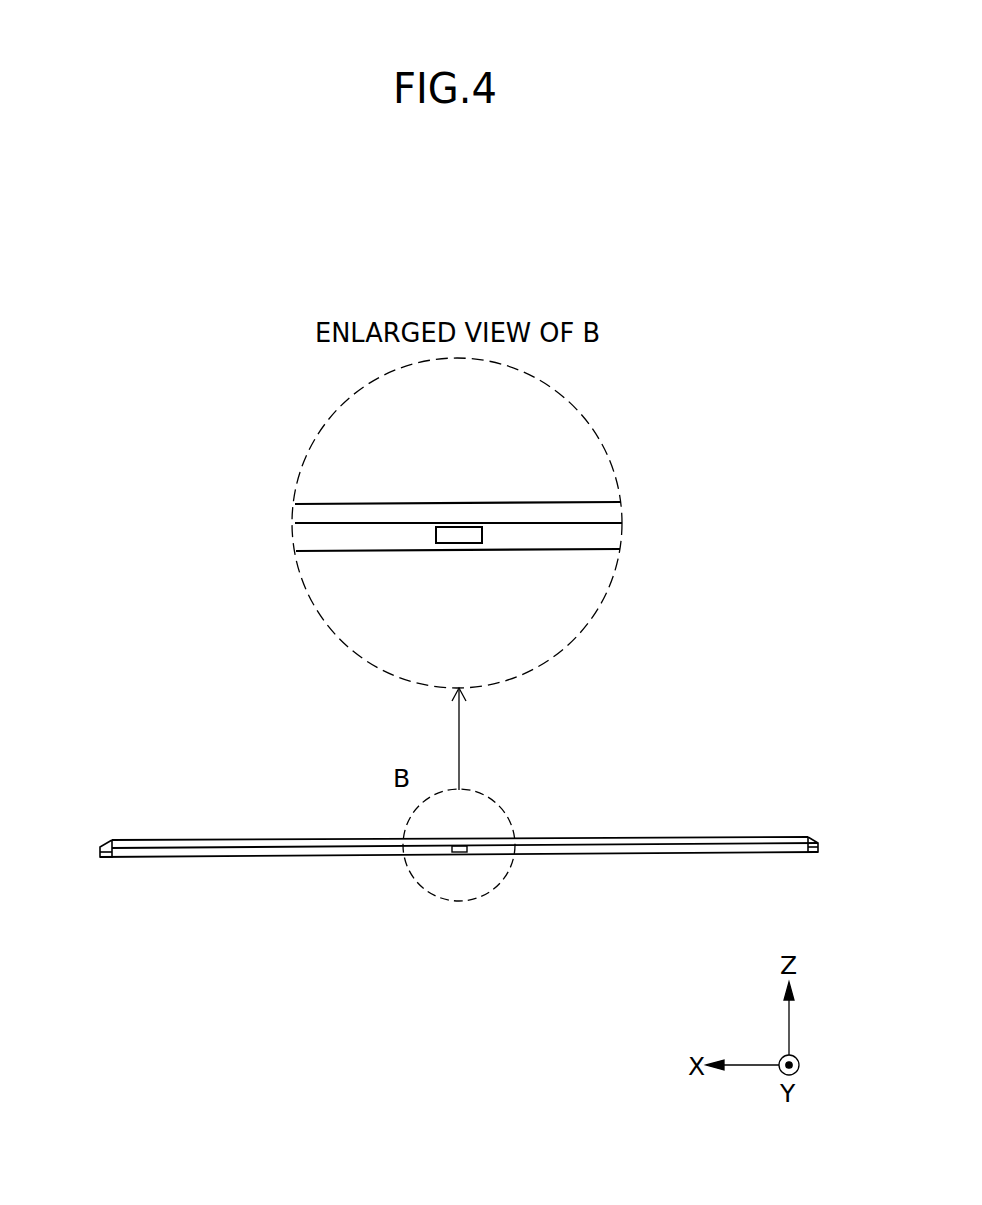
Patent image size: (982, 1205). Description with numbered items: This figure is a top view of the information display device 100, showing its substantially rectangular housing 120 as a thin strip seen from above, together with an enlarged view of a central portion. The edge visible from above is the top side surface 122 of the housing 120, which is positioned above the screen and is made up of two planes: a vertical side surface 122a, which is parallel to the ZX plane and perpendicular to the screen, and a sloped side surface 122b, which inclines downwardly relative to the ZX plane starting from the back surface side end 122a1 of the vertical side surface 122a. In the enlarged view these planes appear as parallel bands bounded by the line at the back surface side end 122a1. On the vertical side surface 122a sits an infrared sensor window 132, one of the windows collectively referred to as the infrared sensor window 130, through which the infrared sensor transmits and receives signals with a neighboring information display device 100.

The information display device 100 is at (95, 288).
The housing 120 is at (785, 846).
The top side surface 122 is at (612, 847).
The vertical side surface 122a is at (676, 848).
The back surface side end 122a1 is at (375, 527).
The sloped side surface 122b is at (698, 840).
The infrared sensor window 130 is at (473, 484).
The infrared sensor window 132 is at (458, 537).